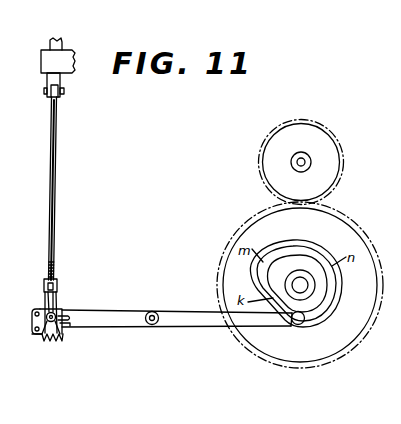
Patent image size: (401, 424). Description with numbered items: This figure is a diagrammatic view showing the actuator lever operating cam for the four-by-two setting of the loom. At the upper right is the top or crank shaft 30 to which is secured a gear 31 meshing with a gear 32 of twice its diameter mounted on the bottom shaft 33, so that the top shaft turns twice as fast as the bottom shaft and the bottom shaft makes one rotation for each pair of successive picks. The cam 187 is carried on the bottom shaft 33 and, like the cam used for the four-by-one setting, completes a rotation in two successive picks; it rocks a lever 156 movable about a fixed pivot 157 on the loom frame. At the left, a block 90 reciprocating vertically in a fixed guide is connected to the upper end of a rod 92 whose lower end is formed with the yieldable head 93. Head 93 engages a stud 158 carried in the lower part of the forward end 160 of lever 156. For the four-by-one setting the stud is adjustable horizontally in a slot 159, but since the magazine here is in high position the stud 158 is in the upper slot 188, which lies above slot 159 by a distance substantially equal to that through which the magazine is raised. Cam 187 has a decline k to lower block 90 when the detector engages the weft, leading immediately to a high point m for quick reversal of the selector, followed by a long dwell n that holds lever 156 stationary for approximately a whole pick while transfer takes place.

The block 90 is at (50, 40).
The rod 92 is at (55, 127).
The yieldable head 93 is at (44, 288).
The stud 158 is at (55, 313).
The upper slot 188 is at (66, 318).
The forward end 160 is at (68, 323).
The slot 159 is at (63, 336).
The fixed pivot 157 is at (154, 313).
The lever 156 is at (210, 323).
The gear 31 is at (297, 119).
The top shaft 30 is at (303, 160).
The gear 32 is at (337, 209).
The cam 187 is at (322, 252).
The bottom shaft 33 is at (310, 288).